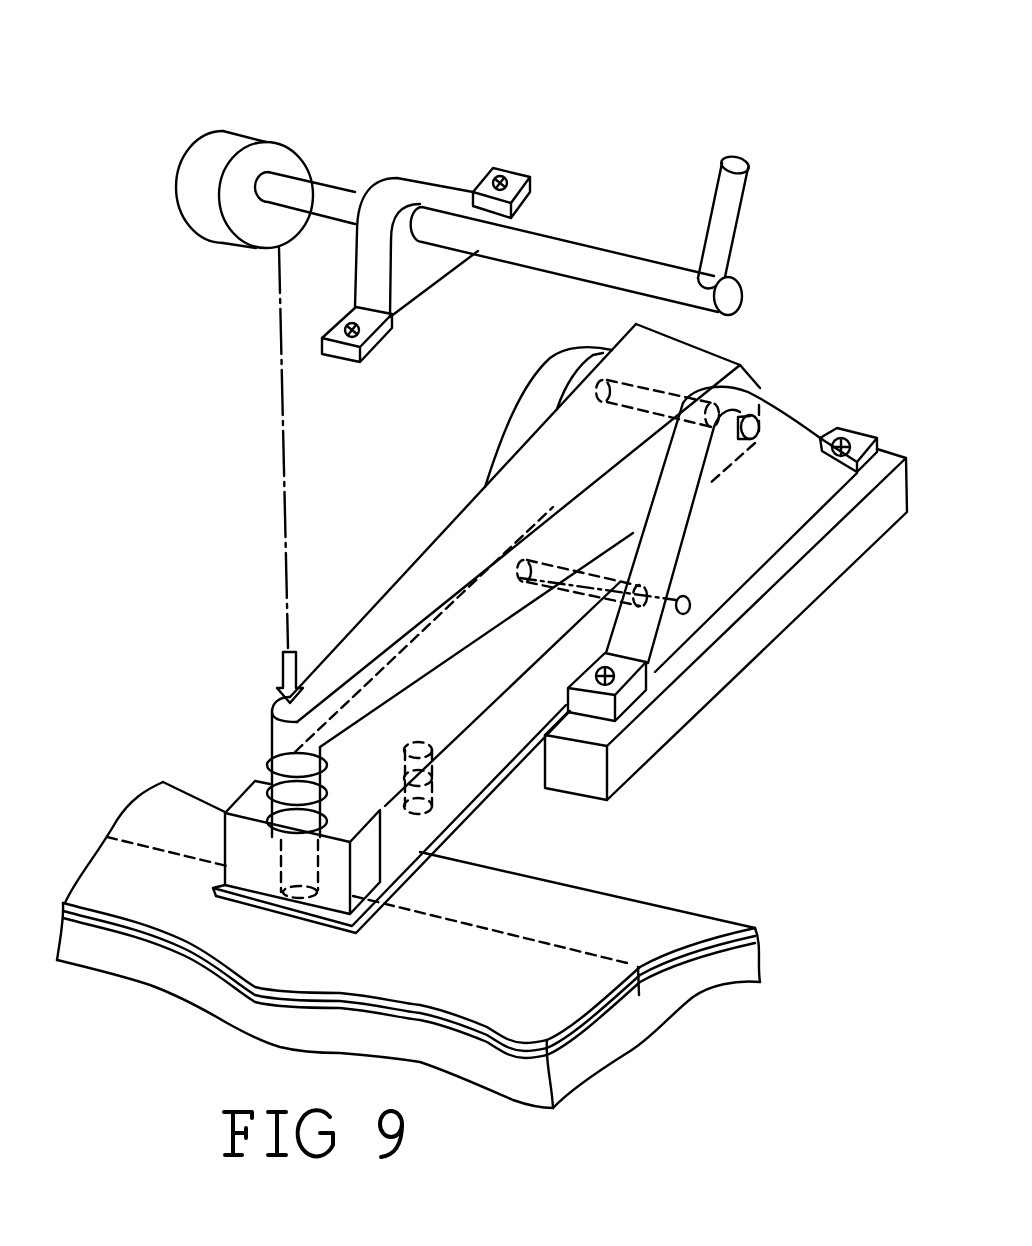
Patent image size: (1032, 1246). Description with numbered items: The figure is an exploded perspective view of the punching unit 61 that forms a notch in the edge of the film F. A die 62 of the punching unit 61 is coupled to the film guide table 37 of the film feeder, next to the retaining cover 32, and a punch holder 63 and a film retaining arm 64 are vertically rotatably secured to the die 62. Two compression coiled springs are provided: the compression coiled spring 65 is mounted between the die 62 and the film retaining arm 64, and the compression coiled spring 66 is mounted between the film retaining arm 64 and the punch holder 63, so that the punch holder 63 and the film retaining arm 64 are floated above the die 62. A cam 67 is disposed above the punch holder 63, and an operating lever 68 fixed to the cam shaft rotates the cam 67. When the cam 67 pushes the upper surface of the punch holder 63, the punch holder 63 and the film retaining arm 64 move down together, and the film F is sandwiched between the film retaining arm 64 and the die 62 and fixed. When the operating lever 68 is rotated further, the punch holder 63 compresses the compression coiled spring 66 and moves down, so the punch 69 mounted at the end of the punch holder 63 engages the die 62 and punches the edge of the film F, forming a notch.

The punching unit 61 is at (352, 142).
The die 62 is at (483, 843).
The punch holder 63 is at (410, 580).
The film retaining arm 64 is at (540, 708).
The compression coiled spring 65 is at (433, 780).
The compression coiled spring 66 is at (254, 868).
The cam 67 is at (248, 147).
The operating lever 68 is at (735, 197).
The punch 69 is at (243, 803).
The retaining cover 32 is at (663, 933).
The film guide table 37 is at (731, 972).
The film F is at (630, 995).